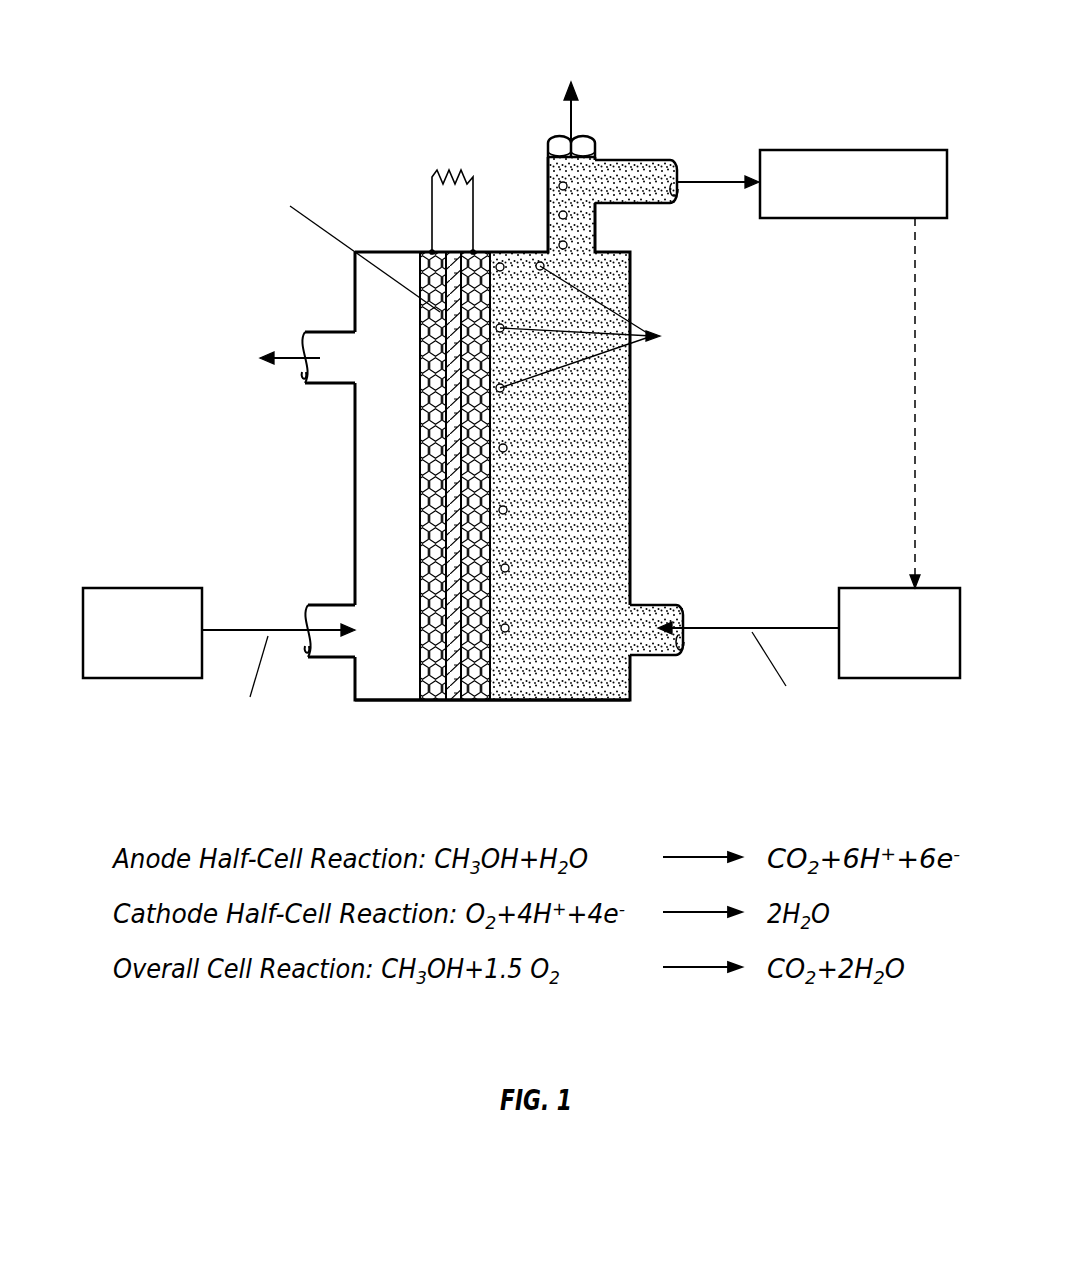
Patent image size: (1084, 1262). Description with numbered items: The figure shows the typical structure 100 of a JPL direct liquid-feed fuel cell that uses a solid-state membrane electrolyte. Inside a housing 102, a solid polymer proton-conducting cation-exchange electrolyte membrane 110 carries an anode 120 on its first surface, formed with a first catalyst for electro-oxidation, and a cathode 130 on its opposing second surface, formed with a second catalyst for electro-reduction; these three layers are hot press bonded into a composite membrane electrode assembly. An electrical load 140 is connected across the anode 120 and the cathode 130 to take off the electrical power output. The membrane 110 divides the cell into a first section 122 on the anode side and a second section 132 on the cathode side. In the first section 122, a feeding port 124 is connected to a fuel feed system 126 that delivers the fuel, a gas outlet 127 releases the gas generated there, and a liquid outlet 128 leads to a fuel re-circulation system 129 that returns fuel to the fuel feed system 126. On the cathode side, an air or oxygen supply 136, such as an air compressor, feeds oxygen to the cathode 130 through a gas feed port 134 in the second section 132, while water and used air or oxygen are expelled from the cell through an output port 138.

The fuel cell structure 100 is at (245, 63).
The housing 102 is at (588, 703).
The solid polymer proton-conducting cation-exchange electrolyte membrane 110 is at (456, 703).
The anode 120 is at (480, 703).
The first section 122 is at (632, 462).
The feeding port 124 is at (655, 605).
The fuel feed system 126 is at (890, 588).
The gas outlet 127 is at (552, 137).
The liquid outlet 128 is at (657, 160).
The fuel re-circulation system 129 is at (812, 150).
The cathode 130 is at (425, 703).
The second section 132 is at (362, 512).
The gas feed port 134 is at (328, 605).
The air or oxygen supply 136 is at (133, 588).
The output port 138 is at (333, 332).
The electrical load 140 is at (447, 172).